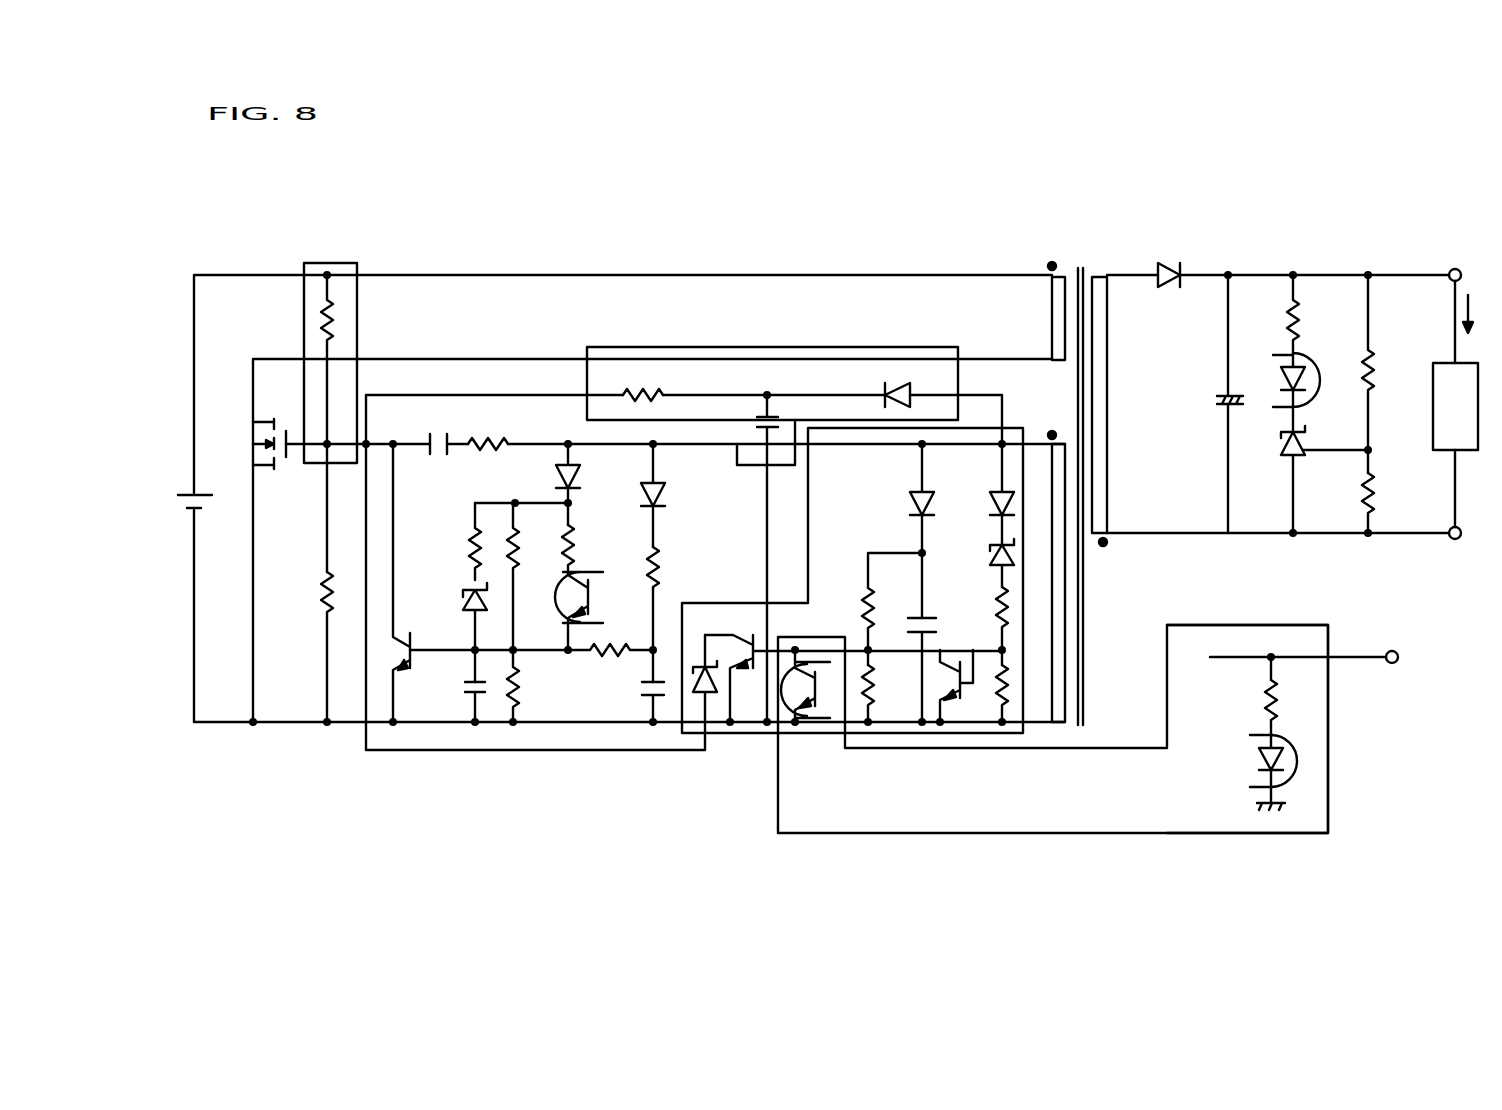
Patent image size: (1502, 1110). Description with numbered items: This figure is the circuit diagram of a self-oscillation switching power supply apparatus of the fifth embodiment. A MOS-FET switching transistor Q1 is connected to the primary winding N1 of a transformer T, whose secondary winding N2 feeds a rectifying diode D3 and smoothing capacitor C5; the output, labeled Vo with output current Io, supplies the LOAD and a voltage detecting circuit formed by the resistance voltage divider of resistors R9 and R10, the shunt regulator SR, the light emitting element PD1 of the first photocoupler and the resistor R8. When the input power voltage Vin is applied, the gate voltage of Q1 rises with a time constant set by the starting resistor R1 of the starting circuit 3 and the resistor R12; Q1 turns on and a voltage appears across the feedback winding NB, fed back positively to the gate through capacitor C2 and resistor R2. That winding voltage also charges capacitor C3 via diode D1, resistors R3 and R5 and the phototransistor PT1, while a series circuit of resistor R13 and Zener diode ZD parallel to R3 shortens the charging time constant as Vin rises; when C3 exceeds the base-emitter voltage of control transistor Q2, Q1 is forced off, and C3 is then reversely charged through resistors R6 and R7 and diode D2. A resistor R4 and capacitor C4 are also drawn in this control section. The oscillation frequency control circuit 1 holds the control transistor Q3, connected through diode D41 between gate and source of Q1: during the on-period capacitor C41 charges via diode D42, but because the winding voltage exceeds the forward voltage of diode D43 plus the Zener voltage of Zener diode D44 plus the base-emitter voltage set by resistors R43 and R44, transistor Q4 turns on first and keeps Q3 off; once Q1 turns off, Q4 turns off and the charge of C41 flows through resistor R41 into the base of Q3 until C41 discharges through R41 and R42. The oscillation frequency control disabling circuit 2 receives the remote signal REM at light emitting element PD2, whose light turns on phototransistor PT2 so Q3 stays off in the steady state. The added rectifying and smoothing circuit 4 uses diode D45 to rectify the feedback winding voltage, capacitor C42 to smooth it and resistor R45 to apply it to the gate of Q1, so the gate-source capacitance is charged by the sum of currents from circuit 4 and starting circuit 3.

The oscillation frequency control circuit 1 is at (1023, 424).
The oscillation frequency control disabling circuit 2 is at (1328, 625).
The starting circuit 3 is at (357, 265).
The rectifying and smoothing circuit 4 is at (755, 347).
The switching transistor Q1 is at (254, 444).
The control transistor Q2 is at (480, 583).
The control transistor Q3 is at (853, 667).
The transistor Q4 is at (956, 680).
The starting resistor R1 is at (342, 423).
The resistor R12 is at (301, 647).
The capacitor C2 is at (439, 432).
The resistor R2 is at (488, 430).
The resistor R45 is at (644, 381).
The diode D45 is at (919, 386).
The capacitor C42 is at (747, 558).
The resistor R13 is at (454, 541).
The Zener diode ZD is at (459, 632).
The capacitor C3 is at (460, 701).
The resistor R3 is at (529, 576).
The resistor R4 is at (529, 686).
The diode D1 is at (581, 484).
The resistor R5 is at (583, 550).
The phototransistor PT1 is at (591, 611).
The resistor R6 is at (610, 666).
The diode D2 is at (667, 495).
The resistor R7 is at (669, 614).
The capacitor C4 is at (664, 698).
The diode D41 is at (691, 676).
The phototransistor PT2 is at (815, 686).
The resistor R41 is at (869, 609).
The resistor R42 is at (887, 693).
The diode D42 is at (900, 531).
The capacitor C41 is at (909, 661).
The diode D43 is at (980, 494).
The Zener diode D44 is at (980, 563).
The resistor R43 is at (977, 626).
The resistor R44 is at (1020, 693).
The transformer T is at (1087, 263).
The primary winding N1 is at (1042, 311).
The secondary winding N2 is at (1113, 411).
The feedback winding NB is at (1041, 576).
The rectifying diode D3 is at (1168, 264).
The smoothing capacitor C5 is at (1212, 404).
The resistor R8 is at (1310, 321).
The light emitting element PD1 is at (1282, 392).
The shunt regulator SR is at (1290, 456).
The resistor R9 is at (1385, 374).
The resistor R10 is at (1391, 503).
The load LOAD is at (1455, 406).
The output voltage terminal Vo is at (1430, 262).
The output current Io is at (1478, 314).
The input power voltage Vin is at (179, 498).
The remote signal REM is at (1329, 662).
The light emitting element PD2 is at (1256, 733).